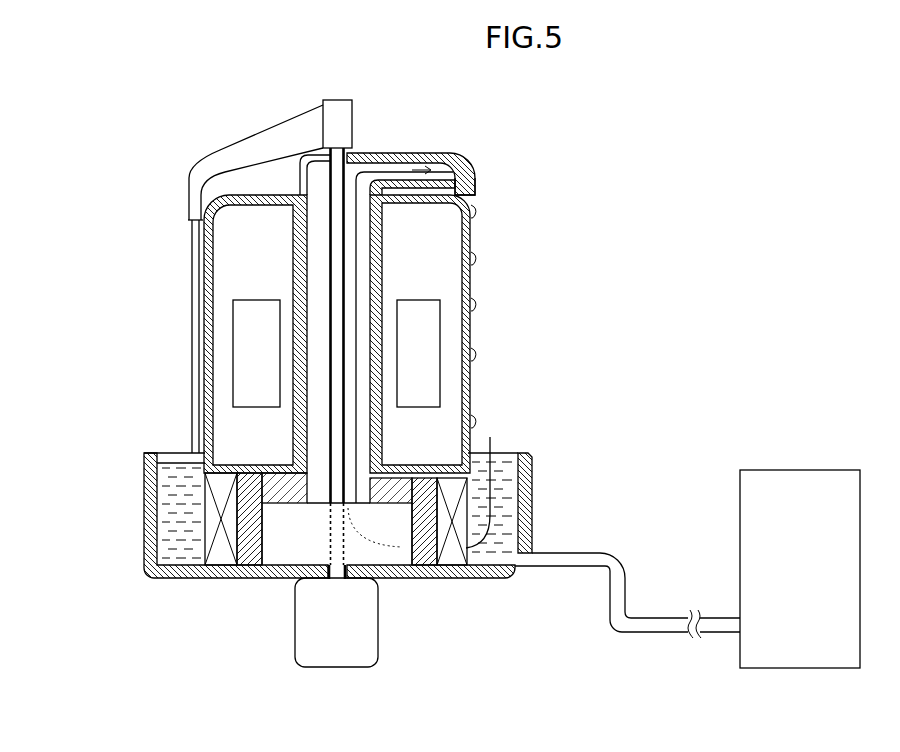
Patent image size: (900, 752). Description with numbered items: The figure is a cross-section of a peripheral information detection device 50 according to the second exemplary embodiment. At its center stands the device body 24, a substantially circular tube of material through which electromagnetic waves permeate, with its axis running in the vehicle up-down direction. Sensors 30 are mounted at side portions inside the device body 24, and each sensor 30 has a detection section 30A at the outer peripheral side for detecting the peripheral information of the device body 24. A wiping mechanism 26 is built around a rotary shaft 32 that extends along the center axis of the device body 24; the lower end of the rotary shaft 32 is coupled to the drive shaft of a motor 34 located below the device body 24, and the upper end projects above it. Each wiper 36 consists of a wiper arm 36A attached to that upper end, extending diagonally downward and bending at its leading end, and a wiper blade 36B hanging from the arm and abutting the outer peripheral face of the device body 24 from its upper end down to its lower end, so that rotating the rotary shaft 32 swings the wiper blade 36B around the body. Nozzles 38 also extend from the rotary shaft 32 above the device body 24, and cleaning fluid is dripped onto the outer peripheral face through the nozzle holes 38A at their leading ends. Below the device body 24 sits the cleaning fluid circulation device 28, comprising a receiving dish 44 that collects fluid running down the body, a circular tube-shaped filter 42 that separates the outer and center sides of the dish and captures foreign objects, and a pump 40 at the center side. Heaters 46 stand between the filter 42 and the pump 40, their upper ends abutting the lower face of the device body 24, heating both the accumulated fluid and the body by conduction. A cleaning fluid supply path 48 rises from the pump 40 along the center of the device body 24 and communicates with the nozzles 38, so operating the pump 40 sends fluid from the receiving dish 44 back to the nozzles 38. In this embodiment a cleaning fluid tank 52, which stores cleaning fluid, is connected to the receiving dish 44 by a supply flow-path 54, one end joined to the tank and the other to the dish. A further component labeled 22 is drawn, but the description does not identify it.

The peripheral information detection device 50 is at (608, 132).
The wiping mechanism 26 is at (357, 143).
The wiper 36 is at (225, 146).
The wiper arm 36A is at (274, 127).
The wiper blade 36B is at (188, 226).
The rotary shaft 32 is at (301, 184).
The nozzle 38 is at (452, 152).
The nozzle hole 38A is at (478, 174).
The device body 24 is at (473, 225).
The left tank 22 is at (255, 334).
The sensor 30 is at (340, 353).
The detection section 30A is at (233, 352).
The cleaning fluid supply path 48 is at (322, 428).
The filter 42 is at (203, 545).
The pump 40 is at (250, 560).
The heater 46 is at (440, 556).
The cleaning fluid circulation device 28 is at (535, 488).
The receiving dish 44 is at (157, 524).
The motor 34 is at (378, 626).
The supply flow-path 54 is at (625, 585).
The cleaning fluid tank 52 is at (805, 470).